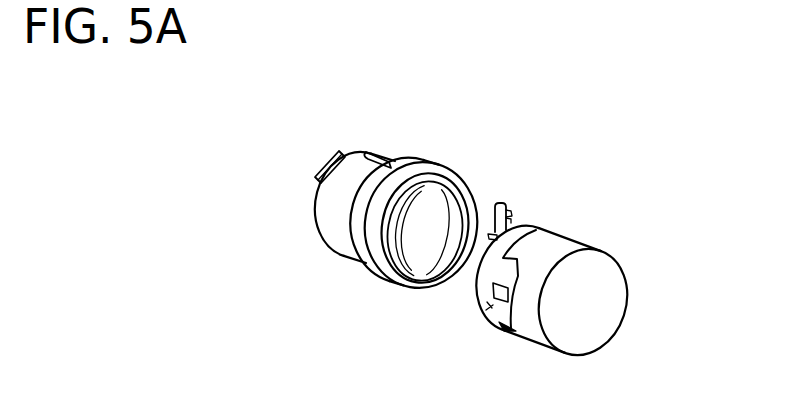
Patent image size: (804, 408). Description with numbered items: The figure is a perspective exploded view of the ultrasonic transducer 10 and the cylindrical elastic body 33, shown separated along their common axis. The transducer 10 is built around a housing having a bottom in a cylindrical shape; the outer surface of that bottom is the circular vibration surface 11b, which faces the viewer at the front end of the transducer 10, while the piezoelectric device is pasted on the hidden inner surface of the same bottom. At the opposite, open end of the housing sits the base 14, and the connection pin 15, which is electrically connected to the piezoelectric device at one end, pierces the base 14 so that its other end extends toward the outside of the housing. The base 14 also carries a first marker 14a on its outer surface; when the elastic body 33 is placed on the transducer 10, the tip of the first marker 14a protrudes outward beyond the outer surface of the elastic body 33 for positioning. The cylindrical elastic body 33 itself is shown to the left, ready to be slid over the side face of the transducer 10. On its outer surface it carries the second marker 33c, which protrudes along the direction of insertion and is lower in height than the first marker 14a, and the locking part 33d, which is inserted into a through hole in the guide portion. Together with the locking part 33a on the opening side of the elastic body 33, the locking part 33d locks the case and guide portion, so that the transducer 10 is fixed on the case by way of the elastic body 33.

The ultrasonic transducer 10 is at (625, 243).
The vibration surface 11b is at (612, 292).
The base 14 is at (486, 309).
The first marker 14a is at (512, 210).
The connection pin 15 is at (488, 232).
The cylindrical elastic body 33 is at (300, 210).
The locking part 33a is at (432, 164).
The second marker 33c is at (373, 151).
The locking part 33d is at (318, 176).